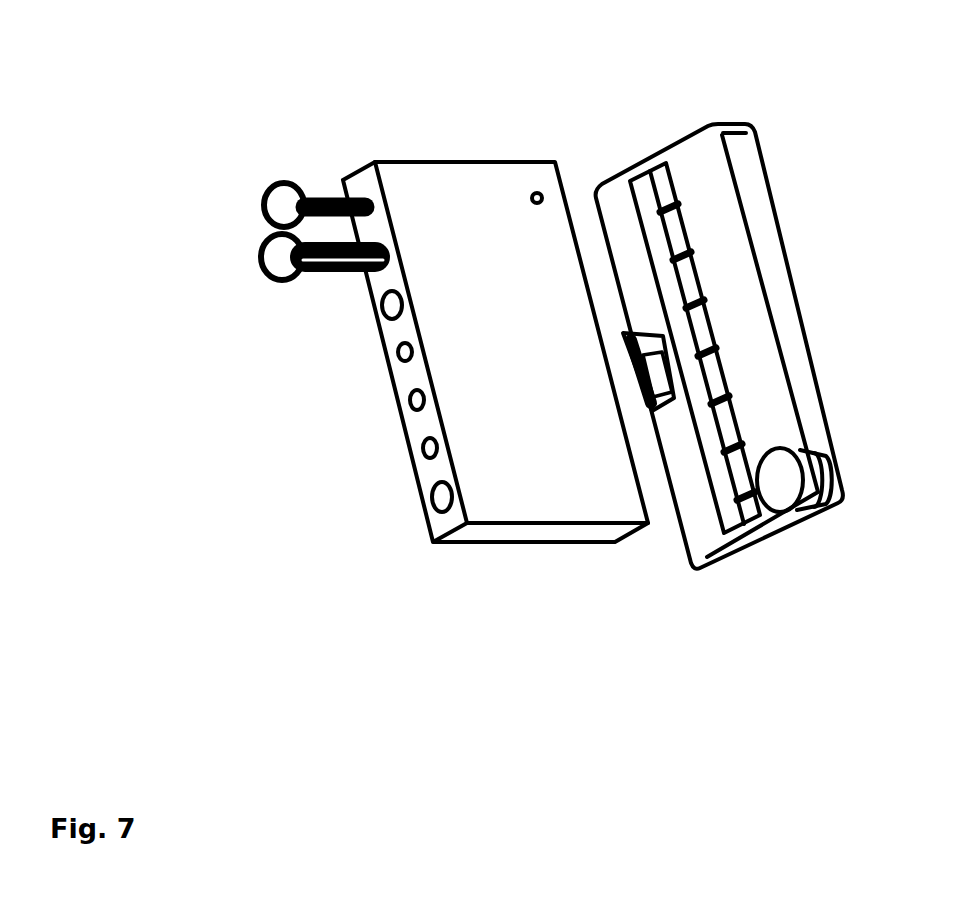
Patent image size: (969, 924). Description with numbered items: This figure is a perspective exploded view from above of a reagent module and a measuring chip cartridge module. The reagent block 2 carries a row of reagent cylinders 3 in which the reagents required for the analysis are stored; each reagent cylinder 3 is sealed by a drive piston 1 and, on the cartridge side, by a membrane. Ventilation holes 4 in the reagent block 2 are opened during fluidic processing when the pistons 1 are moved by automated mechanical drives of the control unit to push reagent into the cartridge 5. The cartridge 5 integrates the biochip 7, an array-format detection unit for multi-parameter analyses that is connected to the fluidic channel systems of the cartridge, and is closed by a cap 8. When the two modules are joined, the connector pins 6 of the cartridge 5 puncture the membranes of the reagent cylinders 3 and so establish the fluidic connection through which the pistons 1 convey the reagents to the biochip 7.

The piston 1 is at (327, 198).
The reagent block 2 is at (538, 552).
The reagent cylinder 3 is at (385, 328).
The ventilation hole 4 is at (533, 188).
The cartridge 5 is at (702, 117).
The connector pin 6 is at (740, 510).
The biochip 7 is at (656, 405).
The cap 8 is at (787, 497).